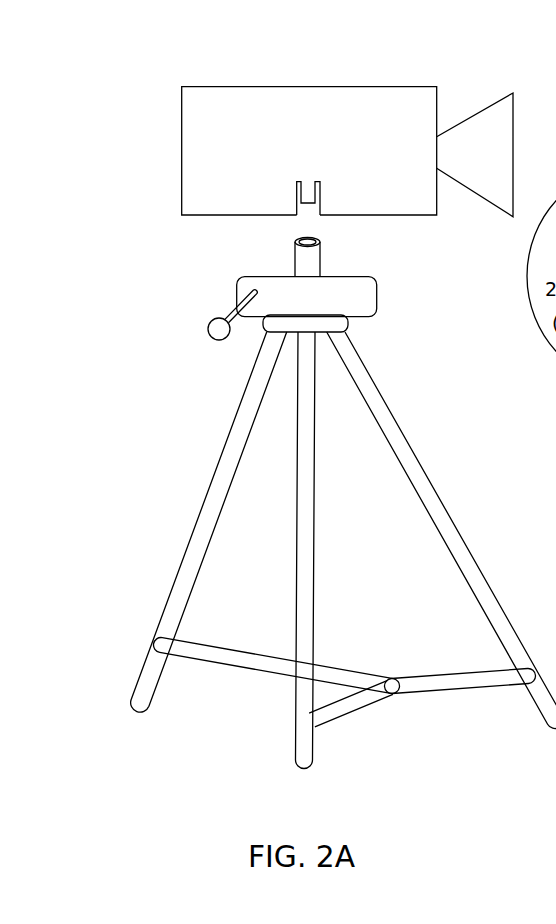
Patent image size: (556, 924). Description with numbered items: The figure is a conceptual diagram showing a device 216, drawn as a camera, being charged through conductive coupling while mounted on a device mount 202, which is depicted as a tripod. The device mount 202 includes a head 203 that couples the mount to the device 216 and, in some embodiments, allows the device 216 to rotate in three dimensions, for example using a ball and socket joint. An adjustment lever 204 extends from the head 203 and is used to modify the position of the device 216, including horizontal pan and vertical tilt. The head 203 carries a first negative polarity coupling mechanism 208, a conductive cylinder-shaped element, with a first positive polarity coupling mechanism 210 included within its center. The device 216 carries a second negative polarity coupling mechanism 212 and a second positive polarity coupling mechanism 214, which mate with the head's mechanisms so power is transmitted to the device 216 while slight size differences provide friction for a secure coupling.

The device mount 202 is at (422, 467).
The head 203 is at (378, 295).
The adjustment lever 204 is at (208, 328).
The first negative polarity coupling mechanism 208 is at (293, 240).
The first positive polarity coupling mechanism 210 is at (322, 241).
The second negative polarity coupling mechanism 212 is at (295, 185).
The second positive polarity coupling mechanism 214 is at (322, 184).
The device 216 is at (332, 87).